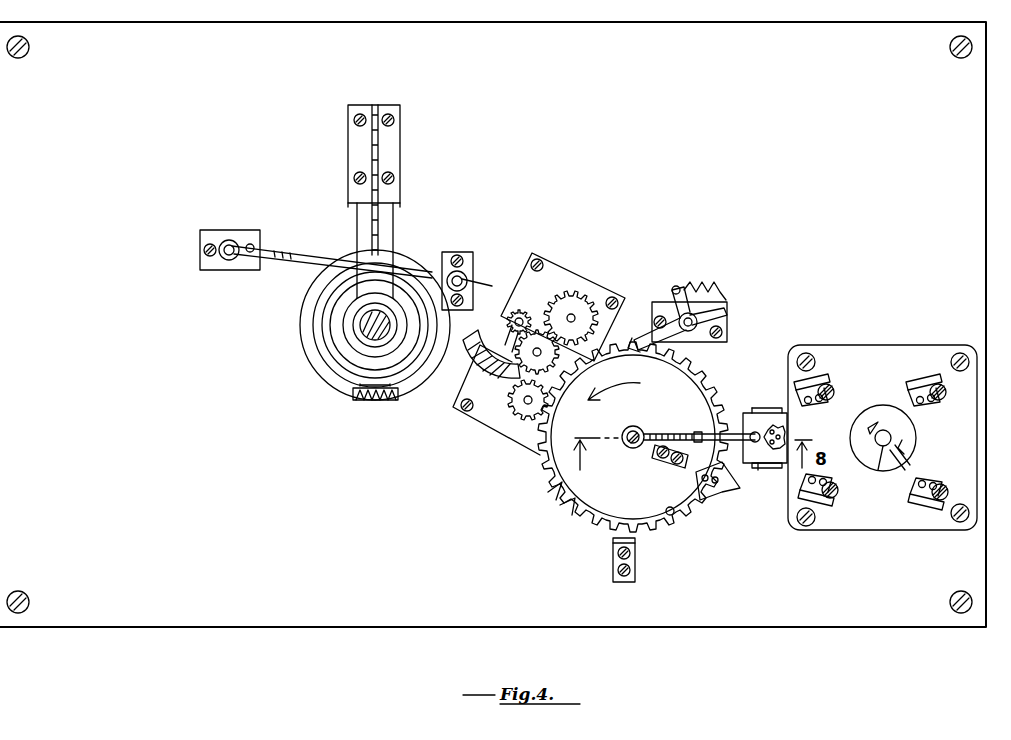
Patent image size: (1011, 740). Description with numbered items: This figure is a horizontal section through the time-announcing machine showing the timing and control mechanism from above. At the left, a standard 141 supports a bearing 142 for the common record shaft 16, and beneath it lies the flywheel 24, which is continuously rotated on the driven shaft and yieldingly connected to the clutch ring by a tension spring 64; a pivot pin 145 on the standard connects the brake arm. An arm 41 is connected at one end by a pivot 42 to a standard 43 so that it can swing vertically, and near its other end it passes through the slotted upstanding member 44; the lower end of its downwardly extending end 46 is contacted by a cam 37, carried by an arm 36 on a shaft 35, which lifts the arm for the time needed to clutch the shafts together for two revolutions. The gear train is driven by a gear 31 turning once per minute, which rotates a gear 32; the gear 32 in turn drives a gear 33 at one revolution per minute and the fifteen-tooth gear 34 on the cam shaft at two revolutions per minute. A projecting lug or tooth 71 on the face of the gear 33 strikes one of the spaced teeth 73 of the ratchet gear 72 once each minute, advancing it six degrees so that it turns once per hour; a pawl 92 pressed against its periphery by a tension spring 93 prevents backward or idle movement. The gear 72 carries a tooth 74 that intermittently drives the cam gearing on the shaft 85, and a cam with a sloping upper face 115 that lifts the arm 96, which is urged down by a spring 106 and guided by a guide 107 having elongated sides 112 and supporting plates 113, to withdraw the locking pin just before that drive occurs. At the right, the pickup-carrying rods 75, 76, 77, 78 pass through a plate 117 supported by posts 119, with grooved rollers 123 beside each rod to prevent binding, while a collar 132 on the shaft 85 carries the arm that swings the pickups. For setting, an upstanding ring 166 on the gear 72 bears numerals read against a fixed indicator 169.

The shaft 16 is at (372, 322).
The flywheel 24 is at (322, 358).
The gear 31 is at (600, 290).
The gear 32 is at (572, 300).
The gear 33 is at (512, 432).
The gear 34 is at (512, 318).
The shaft 35 is at (538, 330).
The arm 36 is at (512, 318).
The cam 37 is at (470, 352).
The arm 41 is at (312, 262).
The pivot 42 is at (229, 240).
The standard 43 is at (230, 260).
The upstanding member 44 is at (452, 262).
The downwardly extending end 46 is at (482, 290).
The tension spring 64 is at (362, 398).
The projecting lug or tooth 71 is at (470, 428).
The ratchet or gear 72 is at (548, 482).
The teeth 73 is at (562, 508).
The tooth 74 is at (718, 492).
The rod 75 is at (940, 382).
The rod 76 is at (832, 384).
The rod 77 is at (830, 510).
The rod 78 is at (935, 510).
The shaft 85 is at (883, 430).
The pawl 92 is at (636, 336).
The tension spring 93 is at (692, 298).
The arm 96 is at (702, 432).
The spring 106 is at (640, 430).
The guide 107 is at (748, 412).
The elongated sides 112 is at (784, 412).
The supporting plates 113 is at (766, 412).
The sloping upper face 115 is at (676, 462).
The plate 117 is at (962, 446).
The post 119 is at (800, 358).
The grooved rollers 123 is at (818, 384).
The collar 132 is at (878, 468).
The standard 141 is at (358, 195).
The bearing 142 is at (362, 318).
The pivot pin 145 is at (342, 340).
The upstanding ring 166 is at (672, 515).
The fixed indicator 169 is at (612, 544).